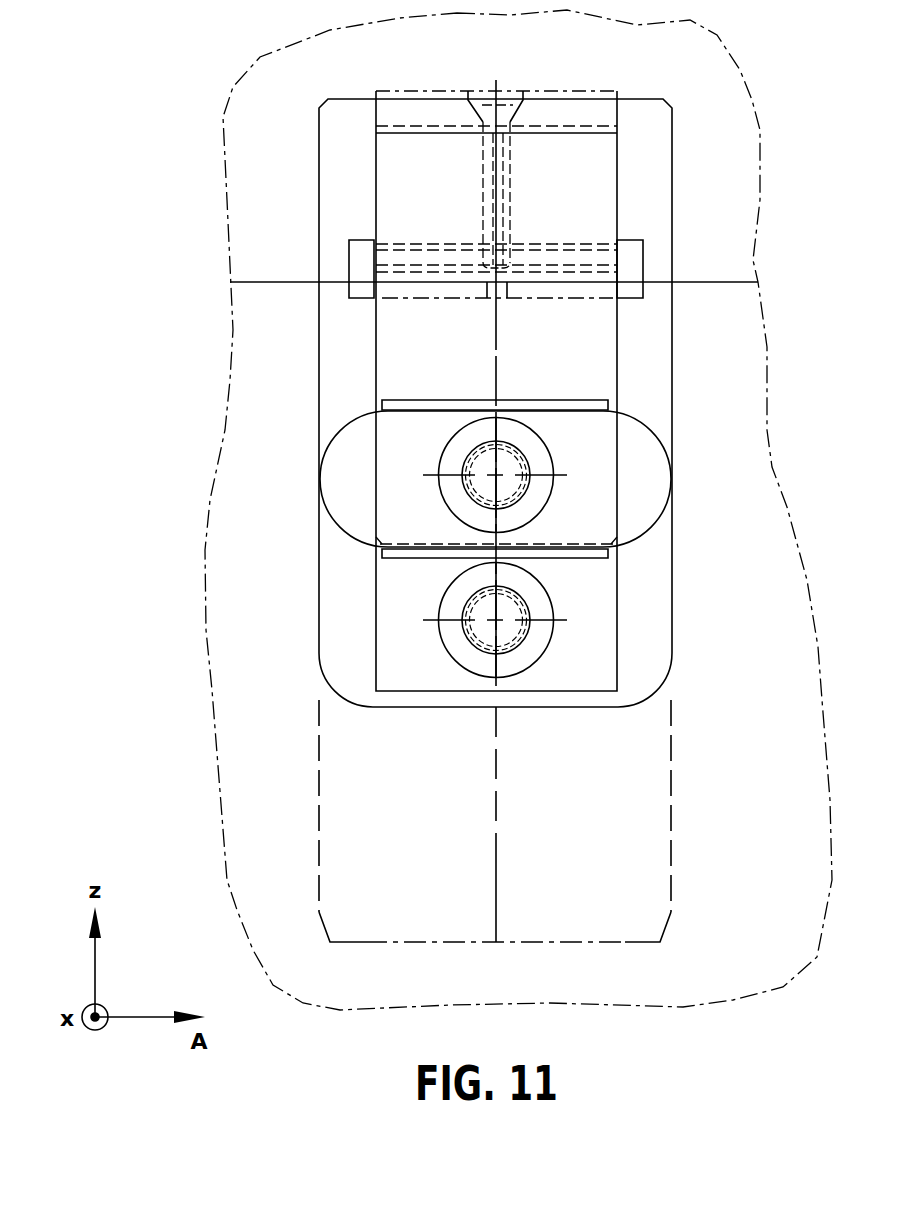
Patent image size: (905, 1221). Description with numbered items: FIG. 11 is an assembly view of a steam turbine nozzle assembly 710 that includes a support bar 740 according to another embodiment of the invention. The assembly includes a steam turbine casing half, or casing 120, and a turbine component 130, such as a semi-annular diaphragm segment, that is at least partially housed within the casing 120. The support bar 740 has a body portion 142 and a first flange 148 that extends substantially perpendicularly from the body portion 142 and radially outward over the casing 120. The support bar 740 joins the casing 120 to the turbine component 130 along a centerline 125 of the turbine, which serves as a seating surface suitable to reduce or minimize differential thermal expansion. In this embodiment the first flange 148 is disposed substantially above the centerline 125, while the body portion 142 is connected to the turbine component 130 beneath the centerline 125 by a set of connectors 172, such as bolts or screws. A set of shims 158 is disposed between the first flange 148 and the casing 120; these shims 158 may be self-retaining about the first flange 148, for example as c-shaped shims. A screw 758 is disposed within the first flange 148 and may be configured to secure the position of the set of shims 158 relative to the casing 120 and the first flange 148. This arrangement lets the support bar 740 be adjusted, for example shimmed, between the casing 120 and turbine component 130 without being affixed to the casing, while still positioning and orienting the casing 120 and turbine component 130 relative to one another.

The steam turbine nozzle assembly 710 is at (168, 93).
The steam turbine casing half 120 is at (304, 158).
The turbine component 130 is at (288, 849).
The body portion 142 is at (446, 899).
The first flange 148 is at (457, 209).
The screw 758 is at (505, 187).
The centerline 125 is at (342, 282).
The set of shims 158 is at (397, 297).
The support bar 740 is at (451, 386).
The set of connectors 172 is at (496, 475).